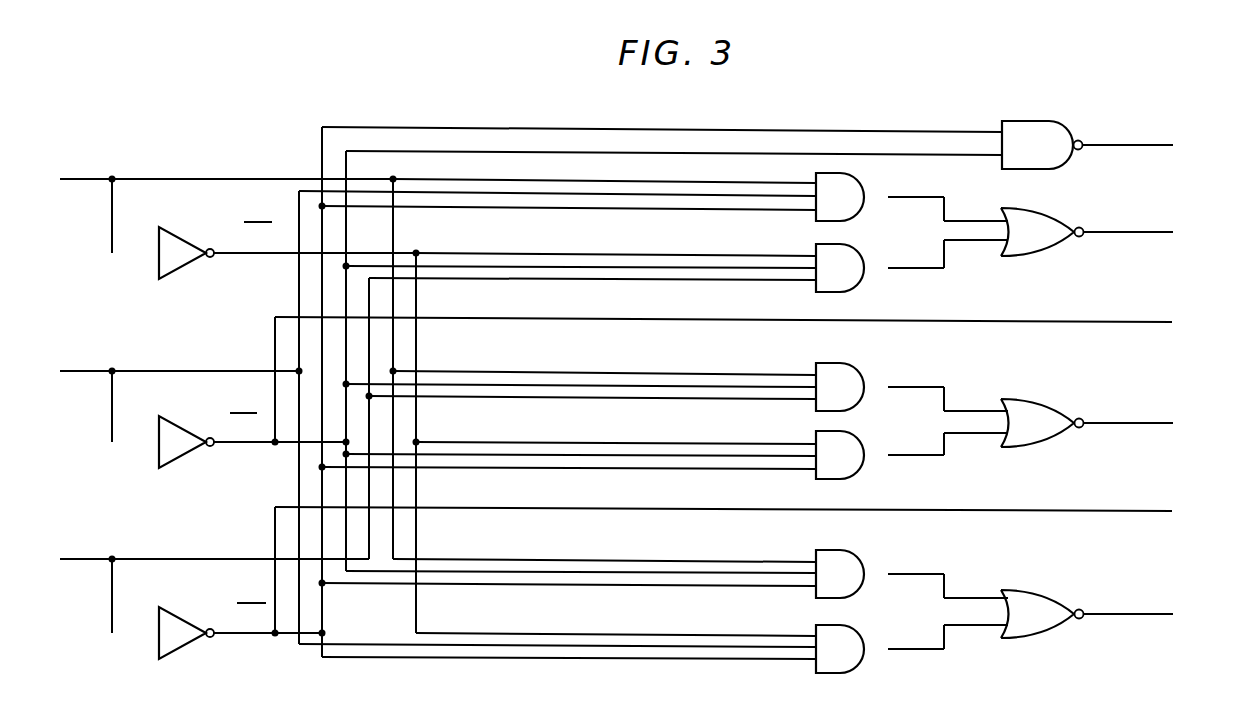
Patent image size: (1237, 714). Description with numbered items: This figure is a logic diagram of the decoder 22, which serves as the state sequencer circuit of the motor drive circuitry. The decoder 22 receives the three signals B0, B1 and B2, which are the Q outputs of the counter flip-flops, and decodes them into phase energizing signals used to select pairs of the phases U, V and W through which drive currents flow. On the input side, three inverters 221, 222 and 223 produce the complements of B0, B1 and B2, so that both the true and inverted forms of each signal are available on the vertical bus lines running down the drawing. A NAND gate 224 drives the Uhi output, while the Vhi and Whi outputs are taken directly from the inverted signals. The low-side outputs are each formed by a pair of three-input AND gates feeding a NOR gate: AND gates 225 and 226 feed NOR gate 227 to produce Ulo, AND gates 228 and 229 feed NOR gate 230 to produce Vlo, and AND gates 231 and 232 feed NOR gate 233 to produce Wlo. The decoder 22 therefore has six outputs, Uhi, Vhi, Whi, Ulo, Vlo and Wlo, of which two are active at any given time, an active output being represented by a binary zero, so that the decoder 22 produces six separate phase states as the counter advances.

The decoder 22 is at (640, 693).
The inverter 221 is at (185, 215).
The inverter 222 is at (195, 410).
The inverter 223 is at (192, 606).
The NAND gate 224 is at (1048, 133).
The AND gate 225 is at (878, 182).
The AND gate 226 is at (868, 252).
The NOR gate 227 is at (1058, 223).
The AND gate 228 is at (868, 375).
The AND gate 229 is at (872, 447).
The NOR gate 230 is at (1043, 415).
The AND gate 231 is at (860, 558).
The AND gate 232 is at (860, 633).
The NOR gate 233 is at (1038, 603).